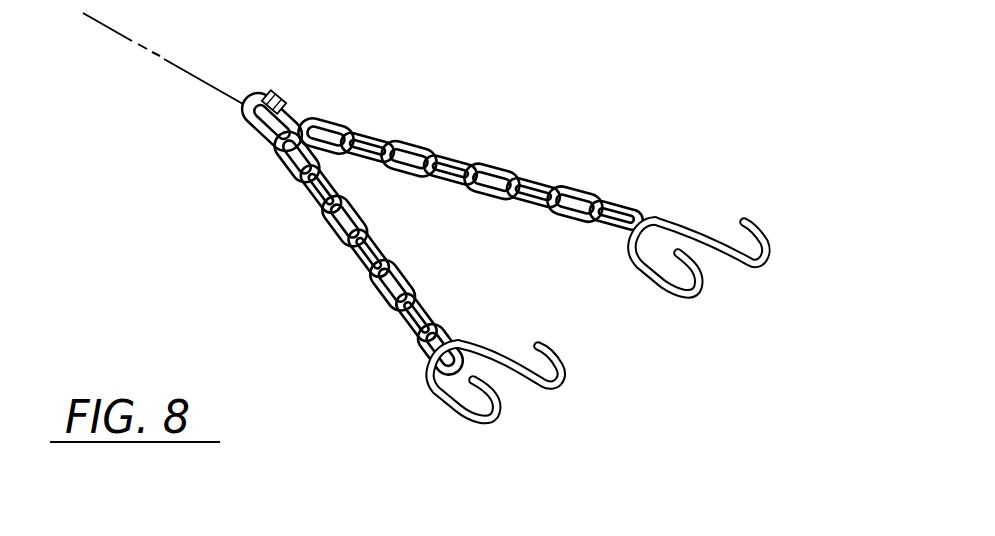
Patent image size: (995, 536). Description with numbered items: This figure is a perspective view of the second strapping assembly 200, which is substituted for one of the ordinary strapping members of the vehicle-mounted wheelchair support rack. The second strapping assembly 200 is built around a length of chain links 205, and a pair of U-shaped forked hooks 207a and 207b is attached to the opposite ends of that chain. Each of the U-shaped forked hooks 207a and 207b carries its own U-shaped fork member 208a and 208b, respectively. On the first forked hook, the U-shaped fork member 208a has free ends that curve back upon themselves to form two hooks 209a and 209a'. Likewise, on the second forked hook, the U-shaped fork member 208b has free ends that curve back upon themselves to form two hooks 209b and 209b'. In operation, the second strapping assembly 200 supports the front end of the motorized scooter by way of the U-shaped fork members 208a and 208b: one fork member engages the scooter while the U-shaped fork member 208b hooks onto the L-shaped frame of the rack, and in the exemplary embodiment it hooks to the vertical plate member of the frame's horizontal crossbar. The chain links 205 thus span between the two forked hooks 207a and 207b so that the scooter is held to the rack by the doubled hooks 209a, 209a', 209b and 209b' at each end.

The second strapping assembly 200 is at (520, 155).
The length of chain links 205 is at (387, 137).
The U-shaped forked hook 207a is at (515, 397).
The U-shaped forked hook 207b is at (722, 285).
The U-shaped fork member 208a is at (427, 390).
The U-shaped fork member 208b is at (718, 160).
The hook 209a is at (402, 446).
The hook 209a' is at (529, 314).
The hook 209b is at (641, 303).
The hook 209b' is at (742, 206).